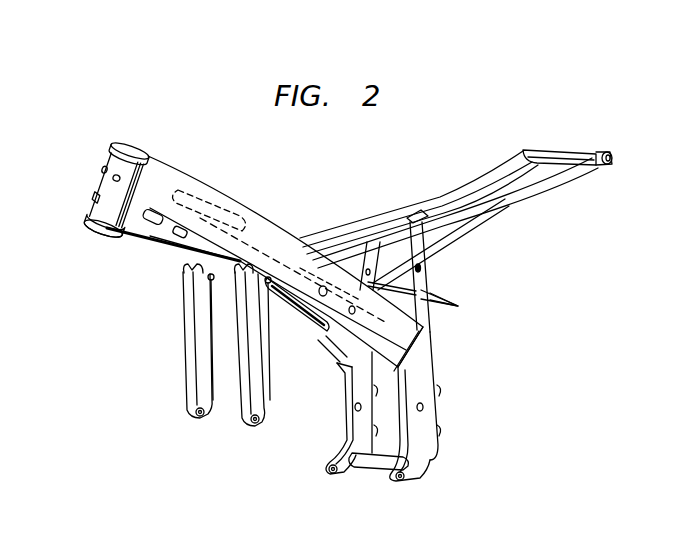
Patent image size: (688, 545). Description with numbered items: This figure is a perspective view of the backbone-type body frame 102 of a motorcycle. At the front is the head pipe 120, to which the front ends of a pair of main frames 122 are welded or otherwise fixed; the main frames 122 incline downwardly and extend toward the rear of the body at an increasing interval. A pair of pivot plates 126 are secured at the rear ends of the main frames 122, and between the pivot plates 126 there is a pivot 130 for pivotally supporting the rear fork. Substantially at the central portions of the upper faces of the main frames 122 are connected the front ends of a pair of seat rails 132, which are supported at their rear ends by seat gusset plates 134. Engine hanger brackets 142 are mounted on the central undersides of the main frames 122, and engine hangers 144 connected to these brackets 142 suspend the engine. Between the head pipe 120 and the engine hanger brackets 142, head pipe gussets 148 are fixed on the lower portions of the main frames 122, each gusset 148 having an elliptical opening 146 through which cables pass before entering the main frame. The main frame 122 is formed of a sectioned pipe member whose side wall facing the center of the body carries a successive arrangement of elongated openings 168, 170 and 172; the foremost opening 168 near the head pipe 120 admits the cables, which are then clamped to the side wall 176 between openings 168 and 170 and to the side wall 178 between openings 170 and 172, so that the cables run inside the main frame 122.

The body frame 102 is at (472, 134).
The head pipe 120 is at (115, 168).
The main frame 122 is at (246, 205).
The pivot plate 126 is at (355, 437).
The pivot 130 is at (378, 472).
The seat rail 132 is at (352, 227).
The seat gusset plate 134 is at (458, 305).
The engine hanger bracket 142 is at (255, 277).
The engine hanger 144 is at (187, 396).
The elliptical opening 146 is at (151, 210).
The head pipe gusset 148 is at (173, 218).
The elongated opening 168 is at (205, 192).
The elongated opening 170 is at (303, 262).
The elongated opening 172 is at (420, 337).
The side wall 176 is at (262, 236).
The side wall 178 is at (385, 216).